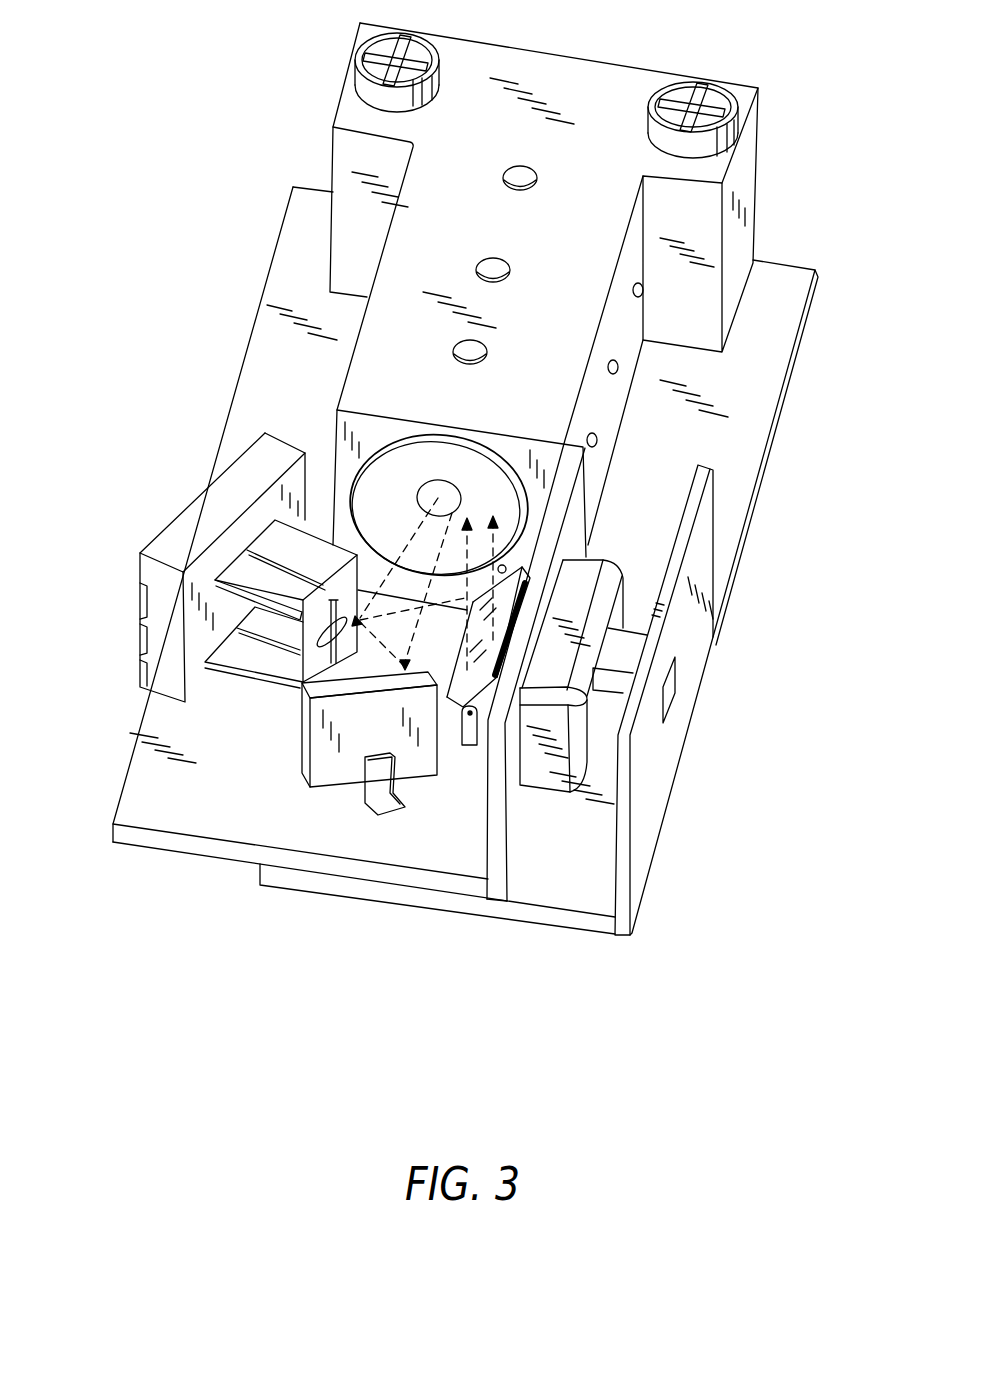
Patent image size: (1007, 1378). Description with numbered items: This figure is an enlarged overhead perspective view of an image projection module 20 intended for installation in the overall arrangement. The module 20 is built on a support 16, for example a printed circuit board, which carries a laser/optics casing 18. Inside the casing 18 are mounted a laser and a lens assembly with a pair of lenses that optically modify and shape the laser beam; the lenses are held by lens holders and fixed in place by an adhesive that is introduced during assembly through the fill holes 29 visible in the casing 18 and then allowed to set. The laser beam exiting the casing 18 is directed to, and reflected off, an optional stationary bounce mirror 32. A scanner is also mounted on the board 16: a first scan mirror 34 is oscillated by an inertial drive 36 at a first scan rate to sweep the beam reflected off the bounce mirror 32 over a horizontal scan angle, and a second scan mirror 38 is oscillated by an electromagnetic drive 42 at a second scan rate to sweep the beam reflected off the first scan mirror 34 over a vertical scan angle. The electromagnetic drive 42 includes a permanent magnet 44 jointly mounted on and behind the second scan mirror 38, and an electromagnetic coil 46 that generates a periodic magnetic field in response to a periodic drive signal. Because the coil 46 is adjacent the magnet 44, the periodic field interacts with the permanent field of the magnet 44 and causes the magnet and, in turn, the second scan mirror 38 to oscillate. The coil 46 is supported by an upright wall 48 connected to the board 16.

The support 16 is at (793, 278).
The laser/optics casing 18 is at (577, 65).
The module 20 is at (707, 58).
The fill holes 29 is at (478, 268).
The stationary bounce mirror 32 is at (312, 790).
The first scan mirror 34 is at (245, 668).
The inertial drive 36 is at (177, 540).
The second scan mirror 38 is at (455, 705).
The electromagnetic drive 42 is at (575, 803).
The permanent magnet 44 is at (483, 702).
The electromagnetic coil 46 is at (560, 793).
The upright wall 48 is at (653, 828).